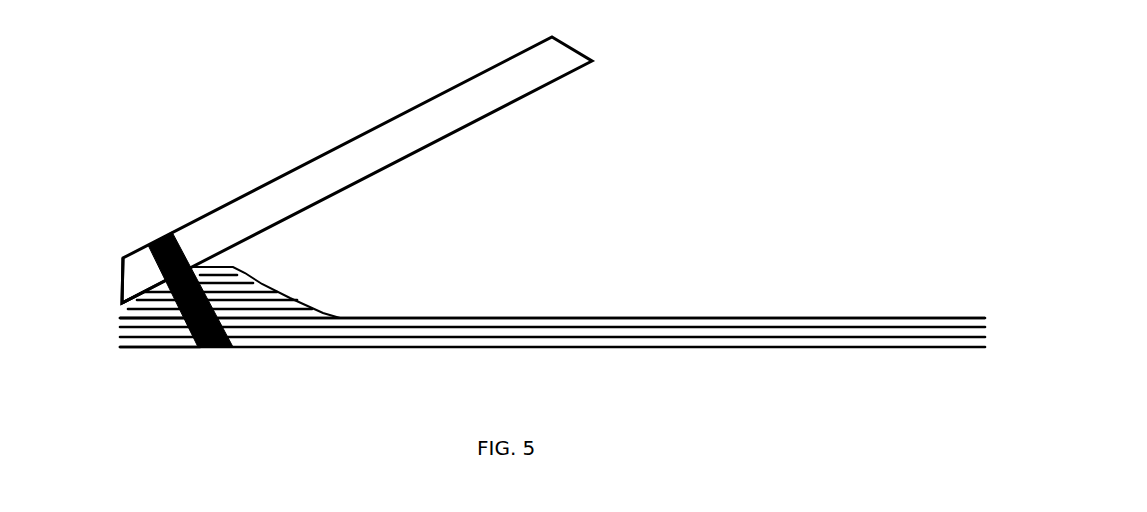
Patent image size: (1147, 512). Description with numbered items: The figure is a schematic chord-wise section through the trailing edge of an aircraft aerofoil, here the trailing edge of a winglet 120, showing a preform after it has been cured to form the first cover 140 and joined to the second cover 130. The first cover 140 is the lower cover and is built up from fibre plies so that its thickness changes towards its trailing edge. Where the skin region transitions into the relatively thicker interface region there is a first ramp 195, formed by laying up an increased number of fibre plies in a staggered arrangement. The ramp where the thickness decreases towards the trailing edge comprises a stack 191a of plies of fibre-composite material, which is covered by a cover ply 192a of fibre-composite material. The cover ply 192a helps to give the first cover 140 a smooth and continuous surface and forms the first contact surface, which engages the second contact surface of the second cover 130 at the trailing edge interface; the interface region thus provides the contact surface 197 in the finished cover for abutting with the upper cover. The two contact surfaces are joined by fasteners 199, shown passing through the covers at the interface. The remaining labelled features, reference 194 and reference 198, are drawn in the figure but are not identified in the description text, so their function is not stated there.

The winglet 120 is at (692, 80).
The second cover 130 is at (330, 165).
The first cover 140 is at (348, 385).
The stack of plies of fibre-composite material 191a is at (268, 313).
The cover ply 192a is at (510, 316).
The bottom edge 194 is at (162, 292).
The first ramp 195 is at (260, 280).
The contact surface 197 is at (140, 290).
The lower layers 198 is at (120, 330).
The fasteners 199 is at (158, 240).